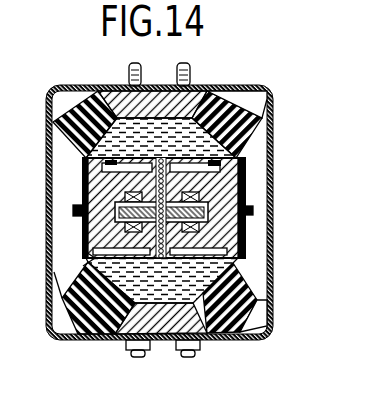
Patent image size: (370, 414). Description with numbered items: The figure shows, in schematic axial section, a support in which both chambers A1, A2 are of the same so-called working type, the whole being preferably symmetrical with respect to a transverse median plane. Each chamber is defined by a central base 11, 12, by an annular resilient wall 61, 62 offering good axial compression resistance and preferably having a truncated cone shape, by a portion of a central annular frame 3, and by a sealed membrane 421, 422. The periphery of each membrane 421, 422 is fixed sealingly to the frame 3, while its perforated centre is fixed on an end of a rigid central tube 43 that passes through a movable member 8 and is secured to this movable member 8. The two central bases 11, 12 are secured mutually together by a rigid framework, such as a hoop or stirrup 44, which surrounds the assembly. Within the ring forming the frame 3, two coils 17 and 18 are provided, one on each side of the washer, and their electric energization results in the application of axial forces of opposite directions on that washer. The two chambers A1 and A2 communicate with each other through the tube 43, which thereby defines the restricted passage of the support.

The central base 11 is at (192, 82).
The central base 12 is at (168, 339).
The annular resilient wall 61 is at (238, 103).
The annular resilient wall 62 is at (238, 320).
The sealed membrane 421 is at (250, 118).
The sealed membrane 422 is at (253, 282).
The coil 18 is at (237, 178).
The central annular frame 3 is at (238, 198).
The movable member 8 is at (248, 214).
The coil 17 is at (228, 240).
The stirrup 44 is at (53, 243).
The rigid central tube 43 is at (88, 257).
The working chamber A1 is at (55, 123).
The working chamber A2 is at (63, 303).